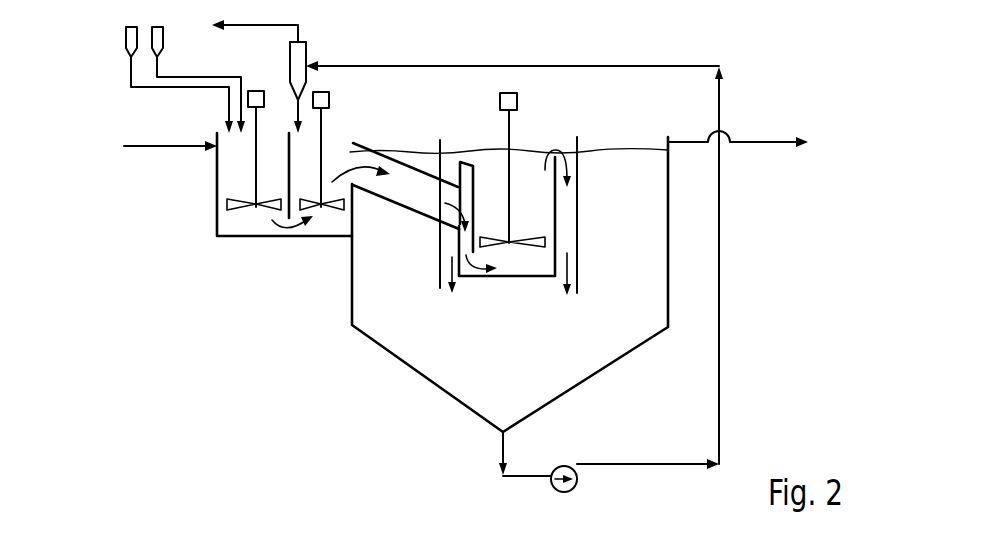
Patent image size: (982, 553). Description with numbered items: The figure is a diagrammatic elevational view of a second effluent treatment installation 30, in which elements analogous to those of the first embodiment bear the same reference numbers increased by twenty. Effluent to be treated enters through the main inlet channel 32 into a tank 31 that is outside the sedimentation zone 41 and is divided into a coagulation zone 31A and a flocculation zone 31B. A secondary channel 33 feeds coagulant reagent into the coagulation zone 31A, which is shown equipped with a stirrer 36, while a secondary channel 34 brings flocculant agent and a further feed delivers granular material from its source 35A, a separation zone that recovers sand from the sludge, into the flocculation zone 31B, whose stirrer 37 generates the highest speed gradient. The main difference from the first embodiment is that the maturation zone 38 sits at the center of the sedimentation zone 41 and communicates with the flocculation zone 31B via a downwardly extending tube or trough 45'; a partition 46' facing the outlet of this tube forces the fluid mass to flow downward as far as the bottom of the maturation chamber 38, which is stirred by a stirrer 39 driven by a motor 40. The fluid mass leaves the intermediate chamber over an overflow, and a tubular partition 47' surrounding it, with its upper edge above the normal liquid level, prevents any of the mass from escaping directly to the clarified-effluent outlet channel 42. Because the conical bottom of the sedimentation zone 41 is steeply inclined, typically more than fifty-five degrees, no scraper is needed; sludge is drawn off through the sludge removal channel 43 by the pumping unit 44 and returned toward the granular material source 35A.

The installation 30 is at (824, 104).
The conditioning tank 31 is at (263, 262).
The coagulation zone 31A is at (238, 223).
The flocculation zone 31B is at (332, 228).
The main inlet channel 32 is at (155, 146).
The secondary channel 33 is at (131, 68).
The secondary channel 34 is at (156, 69).
The source of granular material 35A is at (308, 48).
The stirrer 36 is at (257, 170).
The stirrer 37 is at (322, 130).
The maturation zone 38 is at (524, 285).
The stirrer 39 is at (511, 131).
The motor 40 is at (520, 95).
The sedimentation zone 41 is at (608, 332).
The outlet channel 42 is at (773, 142).
The sludge removal channel 43 is at (500, 447).
The pumping unit 44 is at (578, 477).
The downwardly extending tube 45' is at (400, 224).
The partition 46' is at (466, 167).
The tubular partition 47' is at (587, 216).